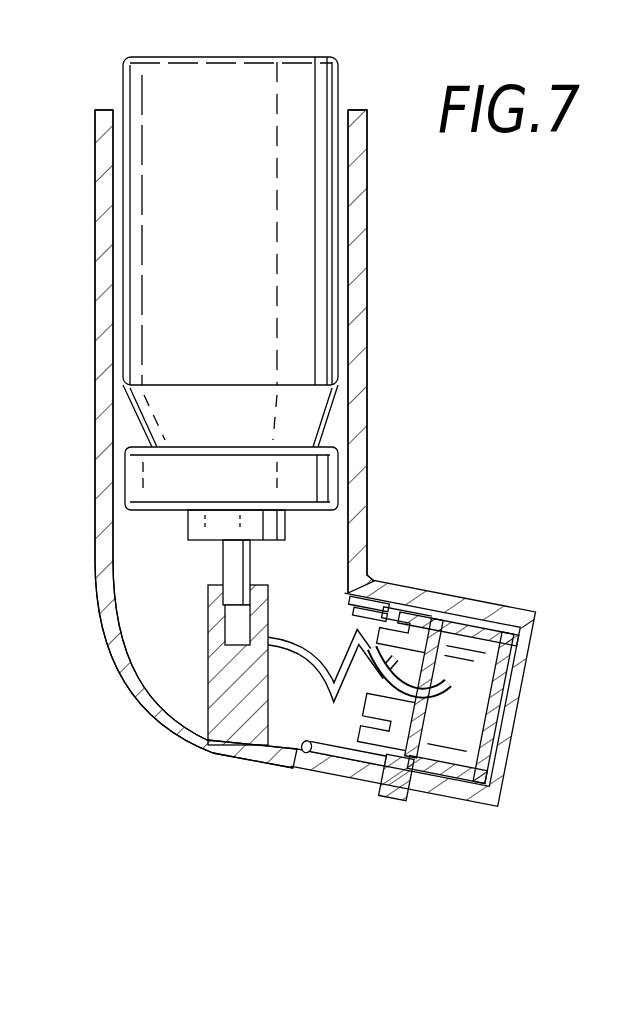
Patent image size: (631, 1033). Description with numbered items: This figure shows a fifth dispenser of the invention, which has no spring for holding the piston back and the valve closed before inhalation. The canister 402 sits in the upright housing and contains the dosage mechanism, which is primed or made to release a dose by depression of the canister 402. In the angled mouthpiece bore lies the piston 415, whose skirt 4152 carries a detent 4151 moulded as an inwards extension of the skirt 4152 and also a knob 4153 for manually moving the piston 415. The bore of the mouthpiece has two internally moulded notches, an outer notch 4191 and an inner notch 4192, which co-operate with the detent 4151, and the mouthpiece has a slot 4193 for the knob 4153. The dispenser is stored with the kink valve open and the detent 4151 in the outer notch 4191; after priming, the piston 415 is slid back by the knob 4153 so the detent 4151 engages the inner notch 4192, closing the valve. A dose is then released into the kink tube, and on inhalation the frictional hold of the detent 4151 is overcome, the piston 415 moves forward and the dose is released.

The canister 402 is at (297, 296).
The piston 415 is at (513, 663).
The detent 4151 is at (325, 748).
The skirt 4152 is at (443, 772).
The knob 4153 is at (397, 797).
The outer notch 4191 is at (327, 773).
The inner notch 4192 is at (290, 765).
The slot 4193 is at (353, 775).